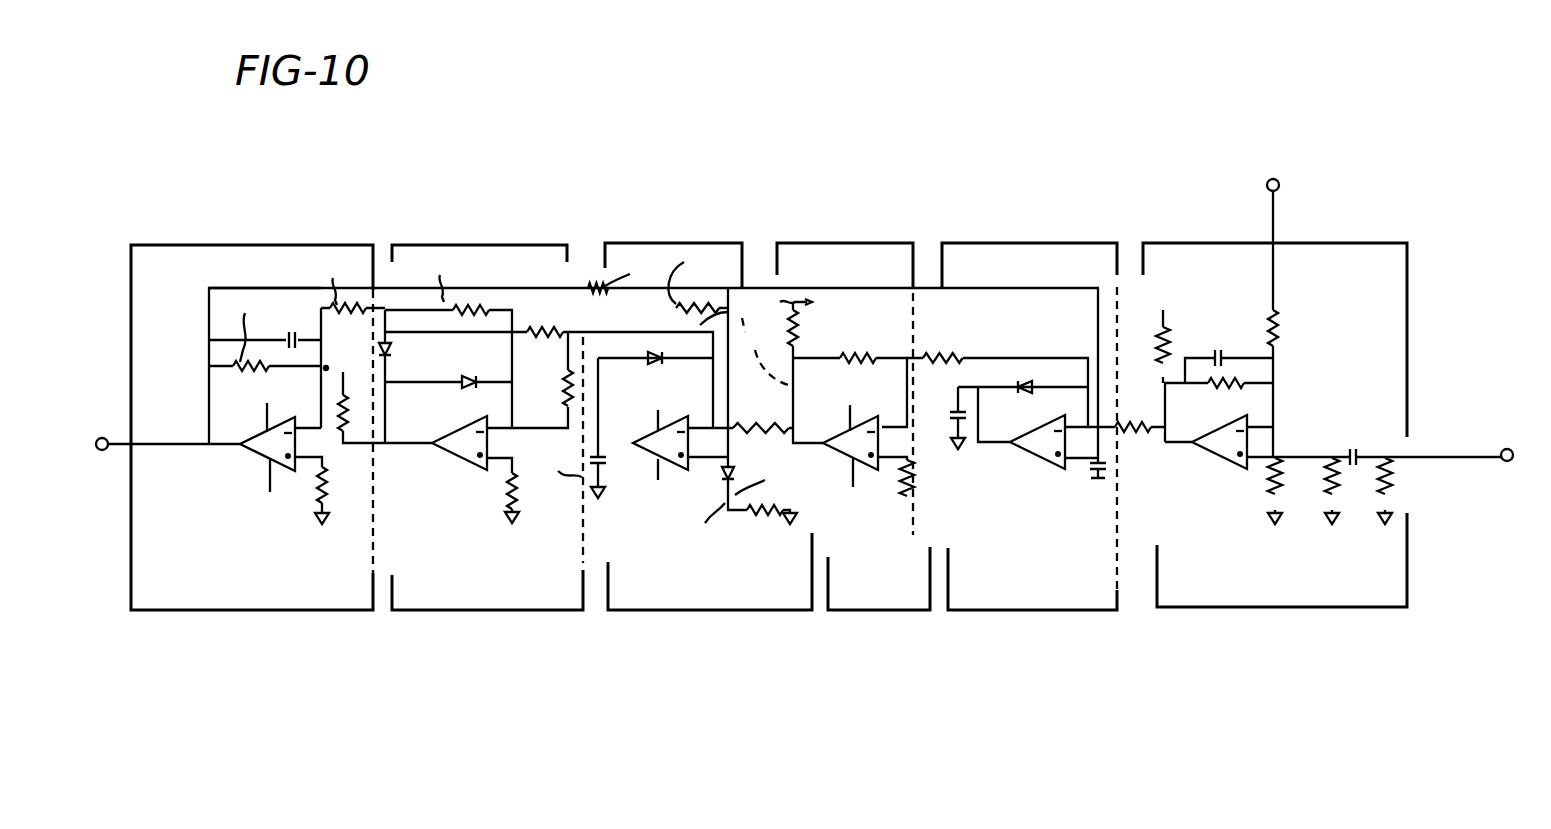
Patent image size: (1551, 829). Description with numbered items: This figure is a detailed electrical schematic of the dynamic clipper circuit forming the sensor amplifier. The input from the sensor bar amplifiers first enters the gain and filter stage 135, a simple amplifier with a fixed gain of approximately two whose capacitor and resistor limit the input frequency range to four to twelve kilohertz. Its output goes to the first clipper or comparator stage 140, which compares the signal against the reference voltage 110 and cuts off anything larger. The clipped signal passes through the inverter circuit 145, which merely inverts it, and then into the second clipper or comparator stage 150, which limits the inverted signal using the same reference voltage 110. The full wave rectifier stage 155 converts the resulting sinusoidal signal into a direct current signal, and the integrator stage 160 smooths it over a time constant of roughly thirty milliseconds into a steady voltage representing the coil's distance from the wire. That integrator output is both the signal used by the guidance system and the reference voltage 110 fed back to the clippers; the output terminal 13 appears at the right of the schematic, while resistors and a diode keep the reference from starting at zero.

The reference voltage 110 is at (209, 328).
The integrator stage 160 is at (308, 245).
The rectifier stage 155 is at (450, 245).
The second clipper or comparator stage 150 is at (653, 243).
The inverter circuit 145 is at (823, 243).
The first clipper or comparator stage 140 is at (1028, 243).
The gain and filter stage 135 is at (1195, 243).
The channel one output terminal 13 is at (1505, 462).